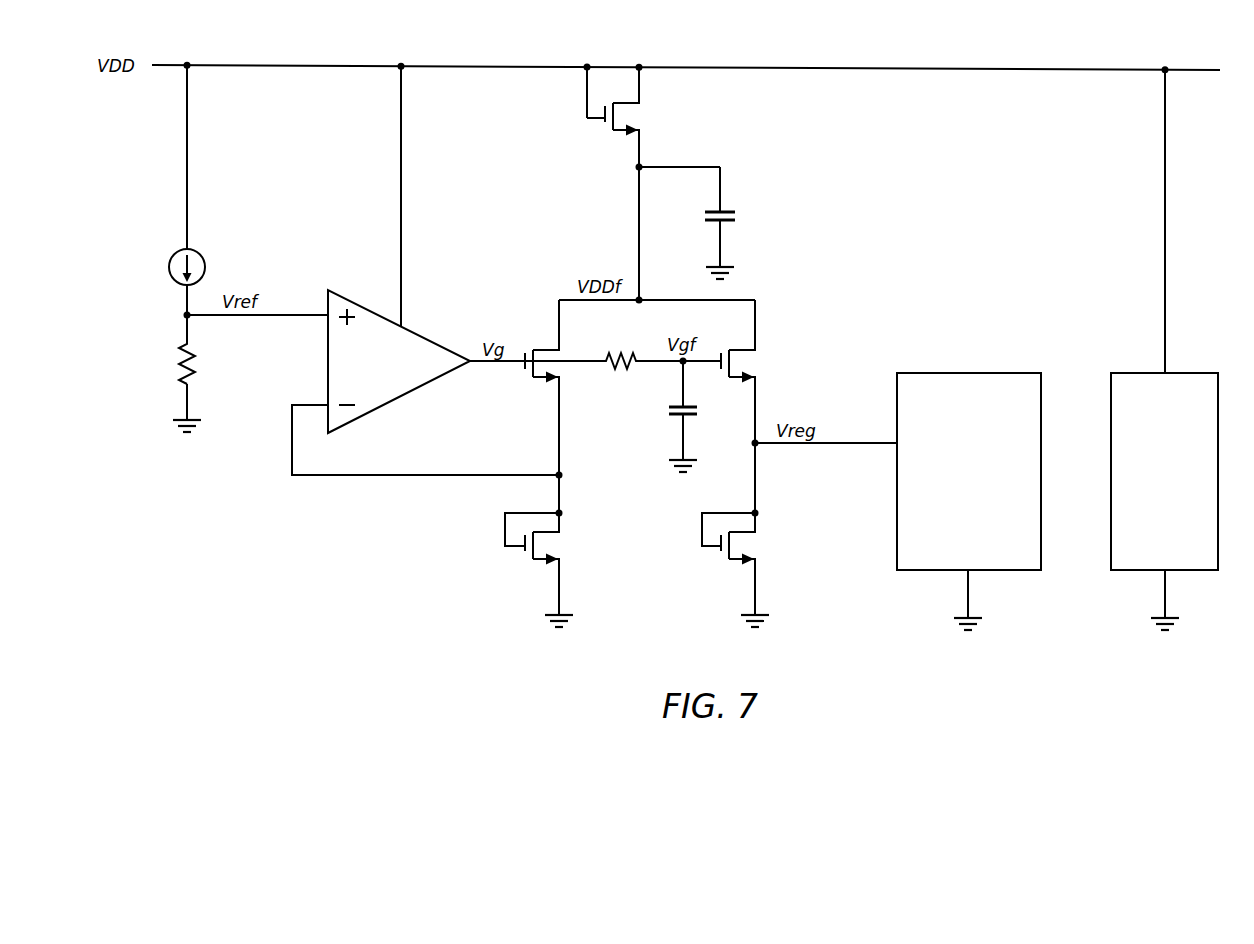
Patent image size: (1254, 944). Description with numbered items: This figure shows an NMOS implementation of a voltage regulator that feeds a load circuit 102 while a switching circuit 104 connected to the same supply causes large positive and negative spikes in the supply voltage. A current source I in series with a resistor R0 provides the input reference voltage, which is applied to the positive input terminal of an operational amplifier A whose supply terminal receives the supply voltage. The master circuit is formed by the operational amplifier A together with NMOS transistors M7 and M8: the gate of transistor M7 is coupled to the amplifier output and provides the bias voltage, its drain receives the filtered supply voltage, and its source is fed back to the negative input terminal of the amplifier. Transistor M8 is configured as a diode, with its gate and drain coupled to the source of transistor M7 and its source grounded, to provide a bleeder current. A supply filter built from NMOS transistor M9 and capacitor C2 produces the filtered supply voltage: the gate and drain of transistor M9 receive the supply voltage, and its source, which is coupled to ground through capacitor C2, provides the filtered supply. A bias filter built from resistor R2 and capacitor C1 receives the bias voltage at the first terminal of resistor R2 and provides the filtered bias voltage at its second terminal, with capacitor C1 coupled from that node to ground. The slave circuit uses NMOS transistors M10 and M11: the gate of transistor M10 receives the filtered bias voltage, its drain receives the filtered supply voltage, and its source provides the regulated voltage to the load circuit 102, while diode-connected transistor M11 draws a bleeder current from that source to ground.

The load circuit 102 is at (969, 501).
The switching circuit 104 is at (1164, 349).
The NMOS transistor M7 is at (540, 356).
The NMOS transistor M8 is at (549, 537).
The NMOS transistor M9 is at (627, 101).
The NMOS transistor M10 is at (761, 366).
The NMOS transistor M11 is at (750, 537).
The capacitor C1 is at (666, 416).
The capacitor C2 is at (687, 223).
The resistor R0 is at (171, 362).
The resistor R2 is at (643, 352).
The current source I is at (176, 175).
The operational amplifier A is at (399, 361).